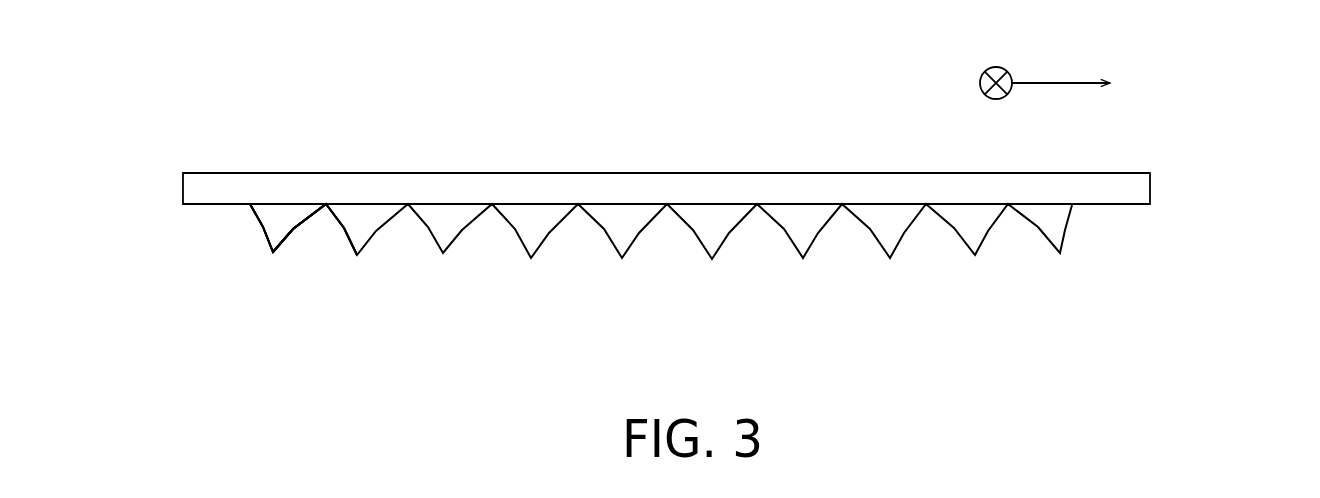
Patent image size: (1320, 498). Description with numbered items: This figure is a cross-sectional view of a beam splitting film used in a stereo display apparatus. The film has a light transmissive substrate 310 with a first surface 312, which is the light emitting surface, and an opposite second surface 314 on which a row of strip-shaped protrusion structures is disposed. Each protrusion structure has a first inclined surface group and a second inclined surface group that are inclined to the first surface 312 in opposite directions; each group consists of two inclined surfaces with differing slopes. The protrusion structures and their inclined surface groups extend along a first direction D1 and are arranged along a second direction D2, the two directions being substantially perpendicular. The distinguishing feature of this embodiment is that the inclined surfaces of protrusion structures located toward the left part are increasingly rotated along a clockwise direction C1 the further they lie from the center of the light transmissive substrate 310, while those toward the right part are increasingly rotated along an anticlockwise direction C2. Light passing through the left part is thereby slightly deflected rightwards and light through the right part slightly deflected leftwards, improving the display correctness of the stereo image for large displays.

The light transmissive substrate 310 is at (1143, 189).
The first surface 312 is at (1032, 172).
The second surface 314 is at (1070, 207).
The clockwise direction C1 is at (348, 378).
The anticlockwise direction C2 is at (1105, 263).
The first direction D1 is at (1001, 68).
The second direction D2 is at (1081, 84).